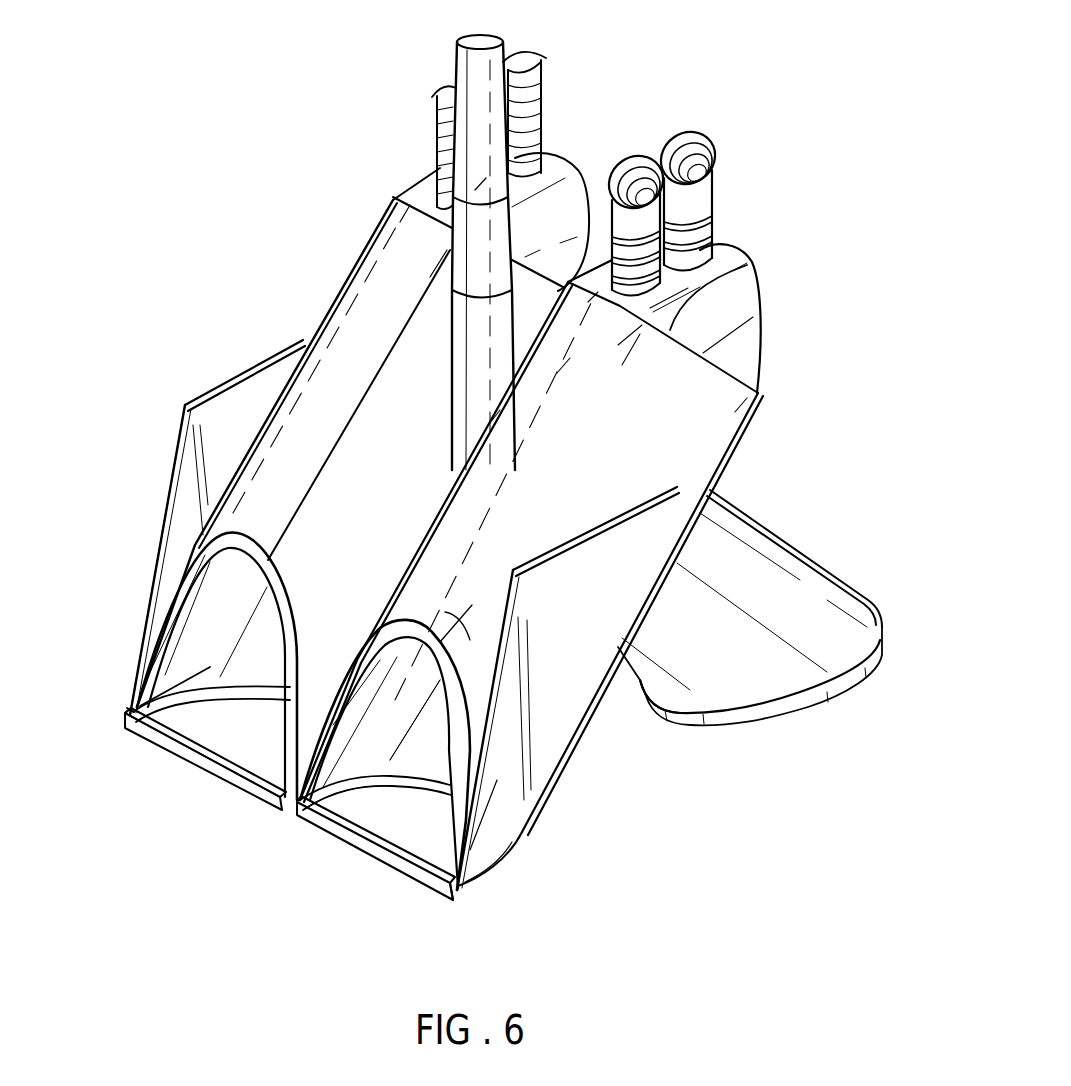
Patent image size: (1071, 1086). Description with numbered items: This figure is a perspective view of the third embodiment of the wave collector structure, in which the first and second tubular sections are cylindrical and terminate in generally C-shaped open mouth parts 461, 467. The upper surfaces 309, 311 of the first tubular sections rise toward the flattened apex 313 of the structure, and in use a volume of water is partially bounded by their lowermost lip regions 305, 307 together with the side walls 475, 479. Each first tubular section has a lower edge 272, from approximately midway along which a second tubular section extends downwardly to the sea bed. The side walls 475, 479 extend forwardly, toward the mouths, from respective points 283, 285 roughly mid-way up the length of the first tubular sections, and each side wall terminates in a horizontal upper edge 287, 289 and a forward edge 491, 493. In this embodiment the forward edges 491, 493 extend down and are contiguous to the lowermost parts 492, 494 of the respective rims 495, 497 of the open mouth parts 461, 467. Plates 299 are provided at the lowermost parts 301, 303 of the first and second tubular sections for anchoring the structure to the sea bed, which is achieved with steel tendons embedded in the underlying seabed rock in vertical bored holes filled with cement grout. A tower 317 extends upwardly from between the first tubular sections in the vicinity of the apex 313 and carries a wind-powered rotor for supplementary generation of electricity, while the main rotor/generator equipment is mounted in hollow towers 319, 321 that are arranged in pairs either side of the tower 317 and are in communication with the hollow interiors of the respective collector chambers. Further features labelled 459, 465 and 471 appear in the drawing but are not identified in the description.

The lower edge 272 is at (577, 730).
The point 283 is at (307, 343).
The point 285 is at (680, 488).
The horizontal upper edge 287 is at (217, 390).
The horizontal upper edge 289 is at (580, 540).
The plates 299 is at (193, 730).
The lowermost part 301 is at (213, 777).
The lowermost part 303 is at (797, 700).
The lowermost (lip) region 305 is at (230, 530).
The lowermost (lip) region 307 is at (493, 700).
The upper surface 309 is at (407, 317).
The upper surface 311 is at (565, 470).
The apex 313 is at (747, 252).
The tower 317 is at (447, 67).
The hollow tower 319 is at (537, 80).
The hollow tower 321 is at (633, 163).
The trough surface 459 is at (367, 322).
The C-shaped open mouth part 461 is at (127, 714).
The second trough 465 is at (680, 420).
The C-shaped open mouth part 467 is at (357, 830).
The platform surface 471 is at (787, 580).
The side wall 475 is at (203, 470).
The side wall 479 is at (545, 657).
The forward edge 491 is at (167, 513).
The lowermost part of rim 492 is at (125, 710).
The forward edge 493 is at (497, 703).
The lowermost part of rim 494 is at (460, 884).
The rim 495 is at (167, 587).
The rim 497 is at (427, 753).